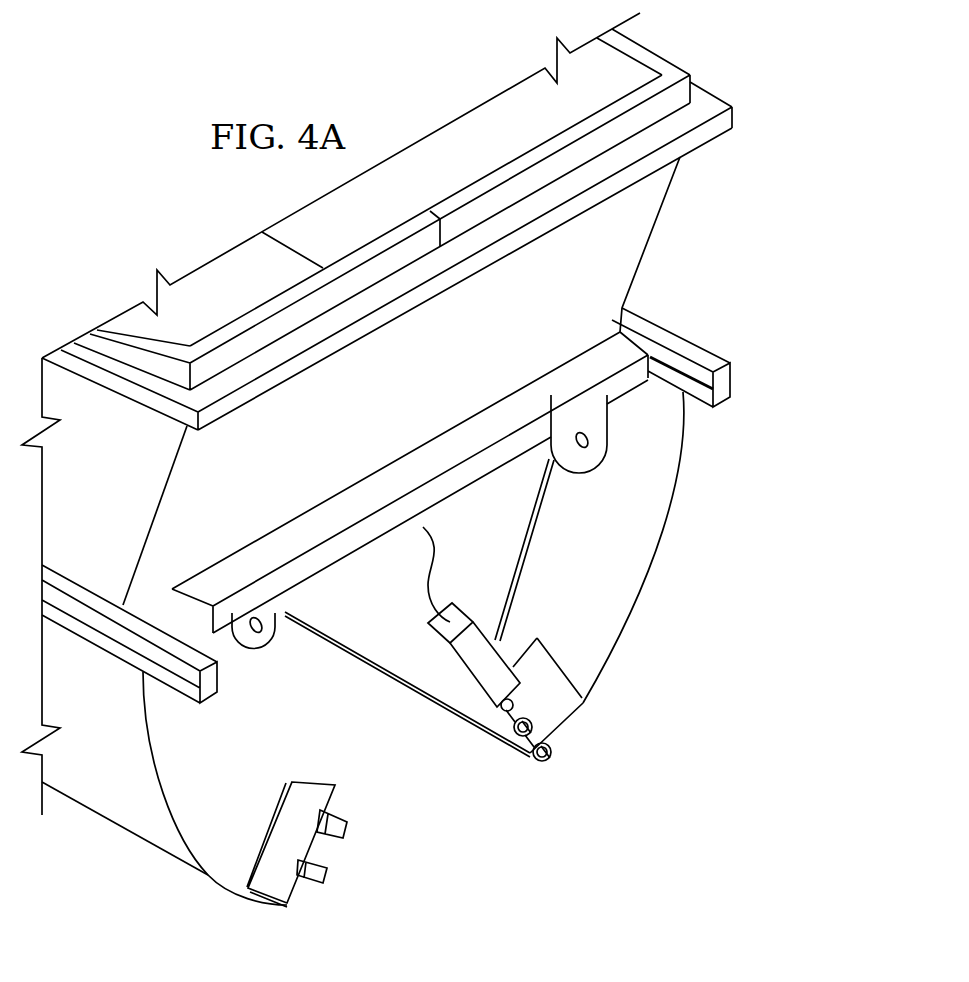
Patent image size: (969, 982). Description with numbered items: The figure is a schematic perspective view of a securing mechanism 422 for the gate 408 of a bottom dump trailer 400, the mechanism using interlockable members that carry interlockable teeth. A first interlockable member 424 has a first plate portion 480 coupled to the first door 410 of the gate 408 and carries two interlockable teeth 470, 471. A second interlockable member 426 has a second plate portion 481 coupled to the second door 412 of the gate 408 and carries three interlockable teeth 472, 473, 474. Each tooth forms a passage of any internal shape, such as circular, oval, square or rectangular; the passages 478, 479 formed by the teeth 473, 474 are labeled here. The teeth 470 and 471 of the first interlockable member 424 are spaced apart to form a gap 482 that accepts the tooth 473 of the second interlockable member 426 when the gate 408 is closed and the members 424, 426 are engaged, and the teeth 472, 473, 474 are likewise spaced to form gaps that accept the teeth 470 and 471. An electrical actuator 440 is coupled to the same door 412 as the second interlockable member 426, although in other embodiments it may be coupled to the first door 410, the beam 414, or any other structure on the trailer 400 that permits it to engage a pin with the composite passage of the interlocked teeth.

The bottom dump trailer 400 is at (752, 238).
The gate 408 is at (190, 908).
The first door 410 is at (133, 835).
The second door 412 is at (668, 450).
The beam 414 is at (423, 495).
The securing mechanism 422 is at (258, 763).
The first interlockable member 424 is at (287, 887).
The second interlockable member 426 is at (552, 728).
The electrical actuator 440 is at (433, 645).
The interlockable tooth 470 is at (347, 812).
The interlockable tooth 471 is at (332, 870).
The interlockable tooth 472 is at (517, 660).
The interlockable tooth 473 is at (543, 716).
The interlockable tooth 474 is at (547, 766).
The passage 478 is at (500, 747).
The passage 479 is at (530, 758).
The first plate portion 480 is at (305, 795).
The second plate portion 481 is at (552, 682).
The gap 482 is at (333, 850).